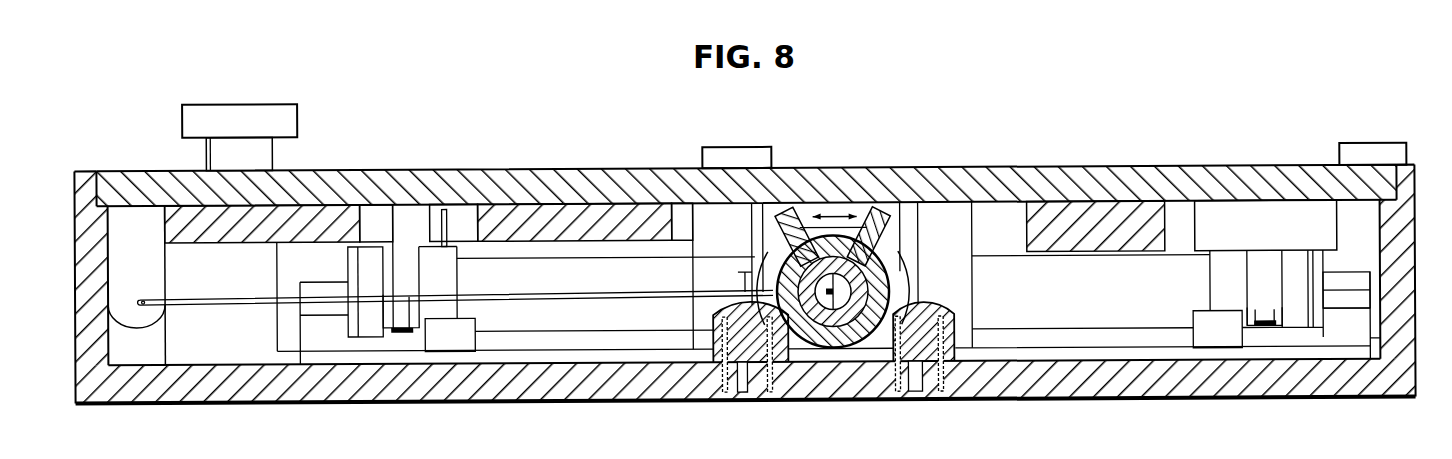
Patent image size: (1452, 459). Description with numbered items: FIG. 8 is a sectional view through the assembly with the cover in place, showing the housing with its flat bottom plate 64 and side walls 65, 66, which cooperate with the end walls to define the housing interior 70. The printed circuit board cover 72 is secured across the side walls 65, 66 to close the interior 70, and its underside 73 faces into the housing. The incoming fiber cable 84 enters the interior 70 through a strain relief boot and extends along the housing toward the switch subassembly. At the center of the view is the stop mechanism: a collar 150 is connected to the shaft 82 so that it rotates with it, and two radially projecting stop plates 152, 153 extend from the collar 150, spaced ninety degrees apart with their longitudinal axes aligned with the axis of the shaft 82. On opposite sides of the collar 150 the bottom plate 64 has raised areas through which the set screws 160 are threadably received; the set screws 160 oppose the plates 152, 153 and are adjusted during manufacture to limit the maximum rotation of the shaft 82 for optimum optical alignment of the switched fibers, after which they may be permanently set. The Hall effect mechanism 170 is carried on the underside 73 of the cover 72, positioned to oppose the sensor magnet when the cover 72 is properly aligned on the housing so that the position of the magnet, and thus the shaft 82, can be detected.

The bottom plate 64 is at (423, 401).
The side wall 65 is at (75, 302).
The side wall 66 is at (1415, 300).
The housing interior 70 is at (1097, 311).
The printed circuit board cover 72 is at (477, 168).
The underside of the cover 73 is at (992, 206).
The shaft 82 is at (836, 347).
The incoming fiber cable 84 is at (232, 300).
The collar 150 is at (896, 262).
The stop plate 152 is at (887, 229).
The stop plate 153 is at (782, 229).
The set screws 160 is at (740, 394).
The Hall effect mechanism 170 is at (832, 212).